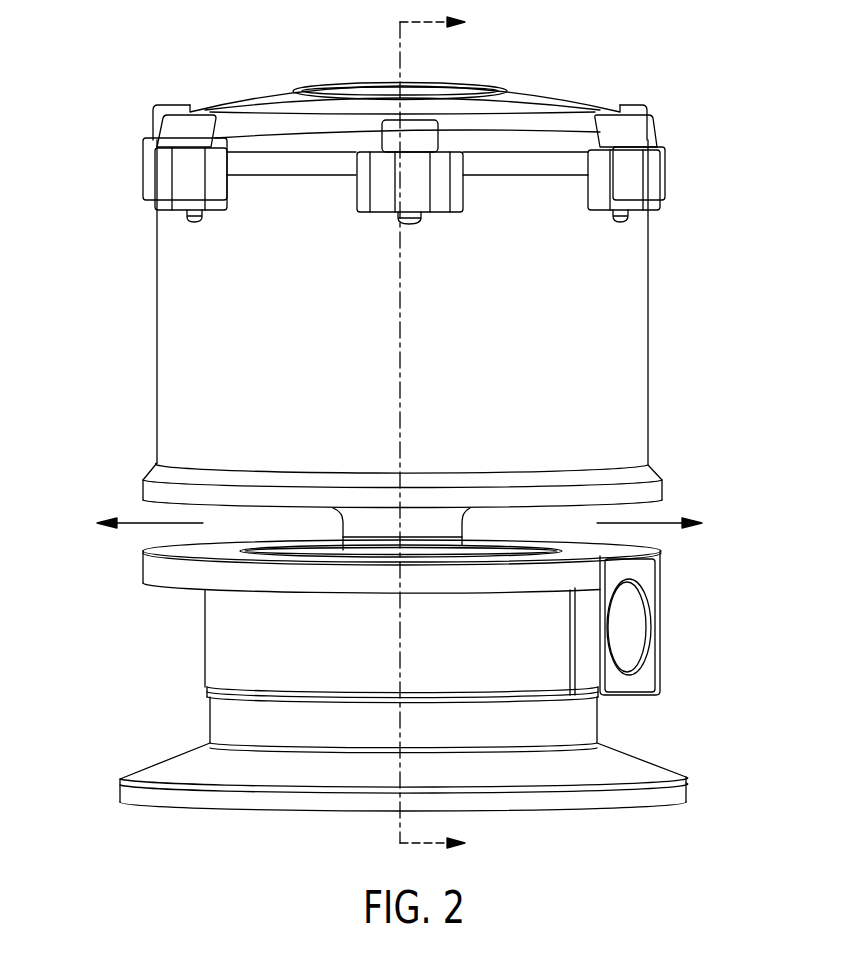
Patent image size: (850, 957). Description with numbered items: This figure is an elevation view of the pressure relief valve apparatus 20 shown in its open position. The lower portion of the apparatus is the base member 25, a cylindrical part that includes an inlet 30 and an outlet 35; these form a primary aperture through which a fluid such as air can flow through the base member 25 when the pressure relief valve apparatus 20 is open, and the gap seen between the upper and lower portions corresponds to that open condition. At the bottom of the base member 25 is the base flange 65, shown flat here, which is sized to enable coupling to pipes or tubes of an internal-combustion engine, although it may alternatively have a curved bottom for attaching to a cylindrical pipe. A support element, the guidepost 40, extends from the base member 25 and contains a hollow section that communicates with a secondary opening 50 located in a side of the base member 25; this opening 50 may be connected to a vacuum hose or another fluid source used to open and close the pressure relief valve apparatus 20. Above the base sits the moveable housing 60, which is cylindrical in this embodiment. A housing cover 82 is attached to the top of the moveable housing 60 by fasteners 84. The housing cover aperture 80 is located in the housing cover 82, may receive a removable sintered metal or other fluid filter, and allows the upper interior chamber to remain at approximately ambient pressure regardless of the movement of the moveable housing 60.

The pressure relief valve apparatus 20 is at (454, 455).
The base member 25 is at (292, 652).
The inlet 30 is at (419, 725).
The outlet 35 is at (403, 524).
The guidepost 40 is at (425, 526).
The opening 50 is at (653, 618).
The moveable housing 60 is at (400, 259).
The base flange 65 is at (167, 776).
The housing cover aperture 80 is at (372, 82).
The housing cover 82 is at (245, 97).
The fasteners 84 is at (173, 130).